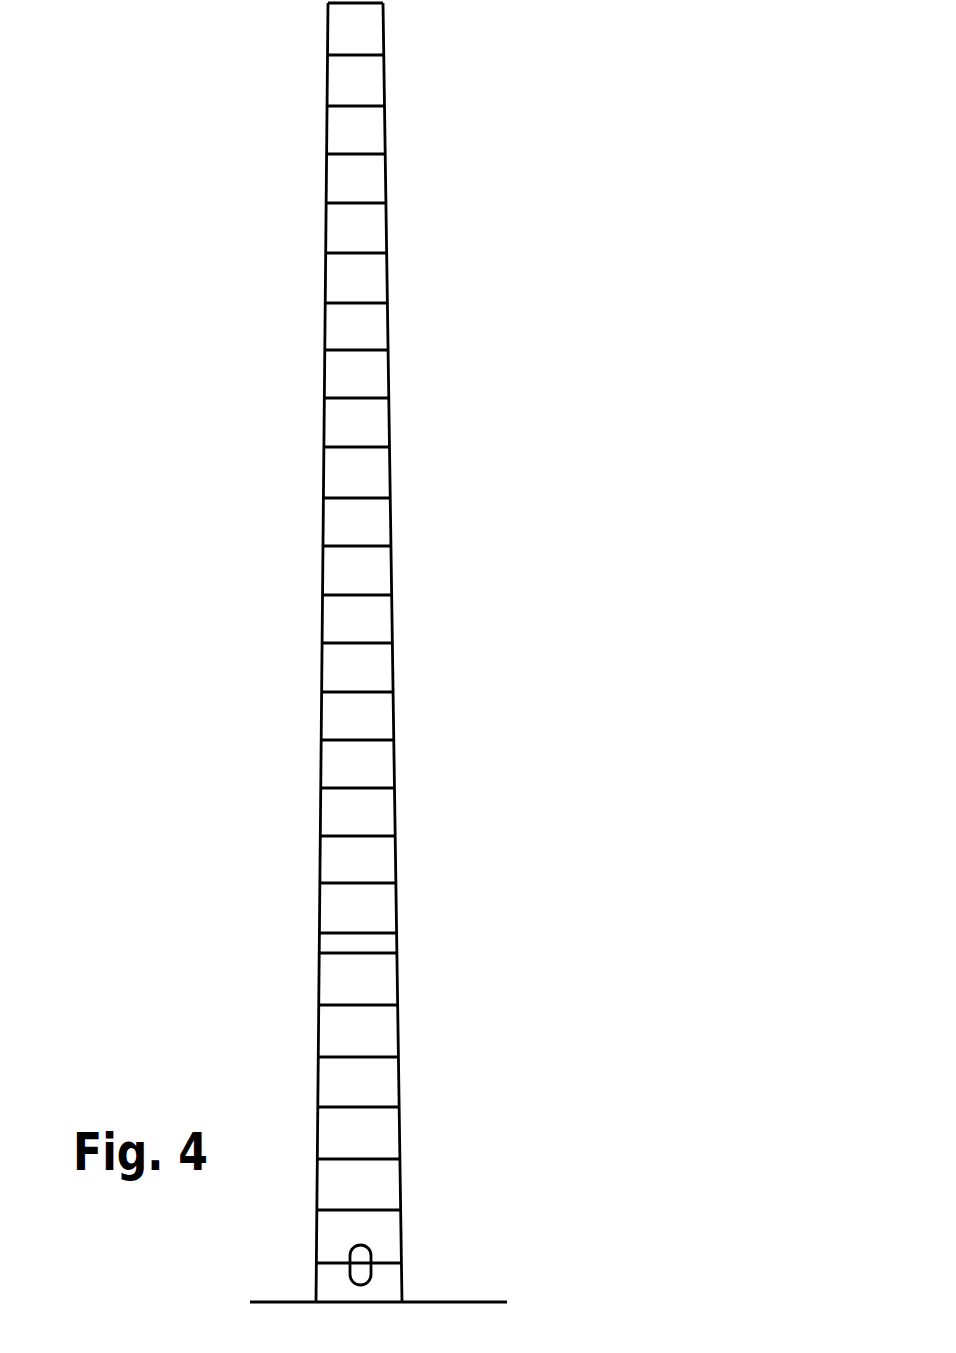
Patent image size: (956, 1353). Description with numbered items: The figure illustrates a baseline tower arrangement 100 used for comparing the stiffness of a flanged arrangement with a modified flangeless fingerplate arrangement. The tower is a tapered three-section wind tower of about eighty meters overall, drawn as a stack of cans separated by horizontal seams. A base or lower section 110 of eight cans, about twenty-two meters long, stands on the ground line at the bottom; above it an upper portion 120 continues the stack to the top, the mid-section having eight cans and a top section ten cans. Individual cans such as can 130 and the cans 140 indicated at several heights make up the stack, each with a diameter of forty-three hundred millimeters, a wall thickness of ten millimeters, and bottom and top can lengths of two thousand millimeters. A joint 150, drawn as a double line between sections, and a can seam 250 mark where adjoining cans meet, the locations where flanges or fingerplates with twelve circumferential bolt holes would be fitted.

The tower 100 is at (262, 568).
The lower tower section 110 is at (540, 1083).
The upper tower section 120 is at (490, 443).
The tower segment 130 is at (437, 271).
The tower segments 140 is at (430, 430).
The flange joint 150 is at (396, 933).
The segment joint 250 is at (390, 498).